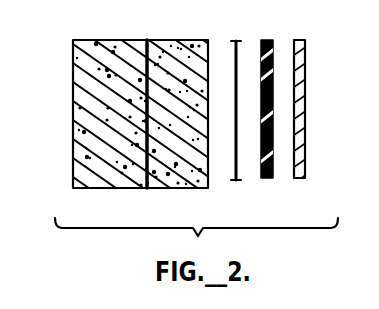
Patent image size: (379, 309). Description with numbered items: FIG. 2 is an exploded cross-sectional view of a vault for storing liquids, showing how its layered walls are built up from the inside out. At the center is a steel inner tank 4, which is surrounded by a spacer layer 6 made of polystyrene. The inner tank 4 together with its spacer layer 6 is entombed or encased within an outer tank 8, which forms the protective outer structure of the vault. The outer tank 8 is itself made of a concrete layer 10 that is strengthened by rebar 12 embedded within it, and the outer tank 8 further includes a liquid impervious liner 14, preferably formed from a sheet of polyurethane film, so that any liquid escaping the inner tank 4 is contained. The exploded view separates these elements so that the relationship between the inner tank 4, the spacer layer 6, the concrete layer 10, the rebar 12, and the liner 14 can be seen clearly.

The inner tank 4 is at (305, 179).
The spacer layer 6 is at (272, 179).
The outer tank 8 is at (123, 136).
The concrete layer 10 is at (102, 188).
The rebar 12 is at (92, 114).
The liquid impervious liner 14 is at (237, 182).